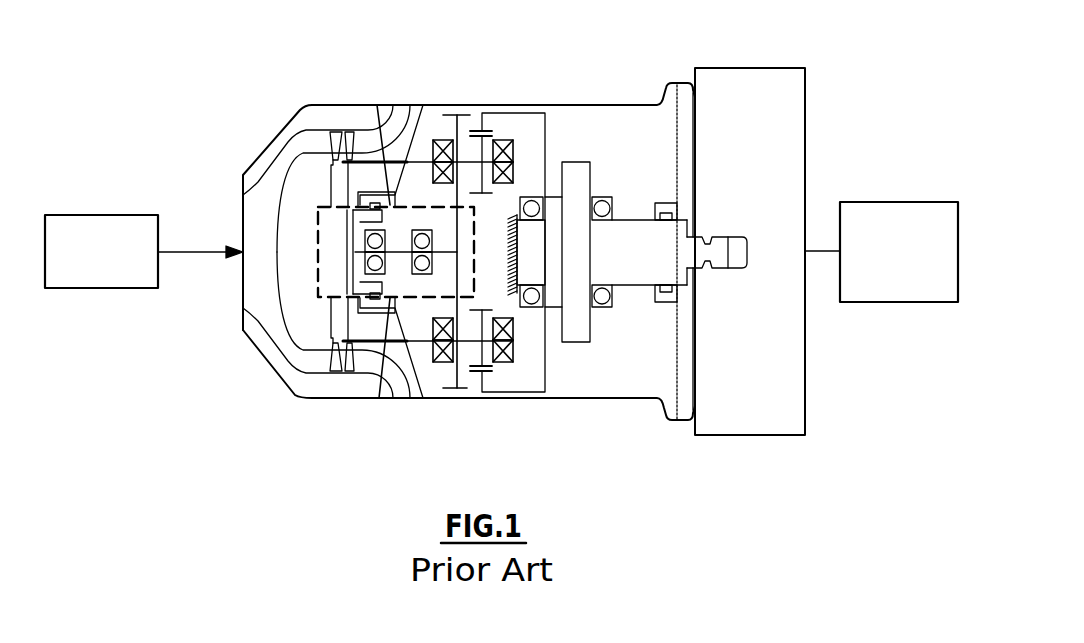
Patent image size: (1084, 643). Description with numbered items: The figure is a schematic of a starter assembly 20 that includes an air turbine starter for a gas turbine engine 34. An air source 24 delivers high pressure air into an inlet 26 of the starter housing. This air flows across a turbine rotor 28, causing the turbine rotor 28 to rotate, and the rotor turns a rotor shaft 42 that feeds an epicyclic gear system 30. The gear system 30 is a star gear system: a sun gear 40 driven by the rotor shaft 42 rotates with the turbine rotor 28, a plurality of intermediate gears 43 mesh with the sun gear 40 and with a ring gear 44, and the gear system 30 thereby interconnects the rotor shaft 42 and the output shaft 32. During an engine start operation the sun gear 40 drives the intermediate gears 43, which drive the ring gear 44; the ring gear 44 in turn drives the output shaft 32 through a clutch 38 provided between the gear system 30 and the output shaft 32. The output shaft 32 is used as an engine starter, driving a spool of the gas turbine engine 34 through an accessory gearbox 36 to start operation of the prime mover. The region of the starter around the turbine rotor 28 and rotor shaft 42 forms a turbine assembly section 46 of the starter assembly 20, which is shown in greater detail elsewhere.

The starter assembly 20 is at (180, 74).
The air source 24 is at (82, 215).
The inlet 26 is at (240, 152).
The turbine rotor 28 is at (337, 303).
The epicyclic gear system 30 is at (460, 270).
The output shaft 32 is at (718, 243).
The gas turbine engine 34 is at (907, 202).
The accessory gearbox 36 is at (757, 412).
The clutch 38 is at (573, 328).
The sun gear 40 is at (474, 233).
The rotor shaft 42 is at (397, 253).
The intermediate gears 43 is at (462, 122).
The ring gear 44 is at (531, 113).
The turbine assembly section 46 is at (377, 105).